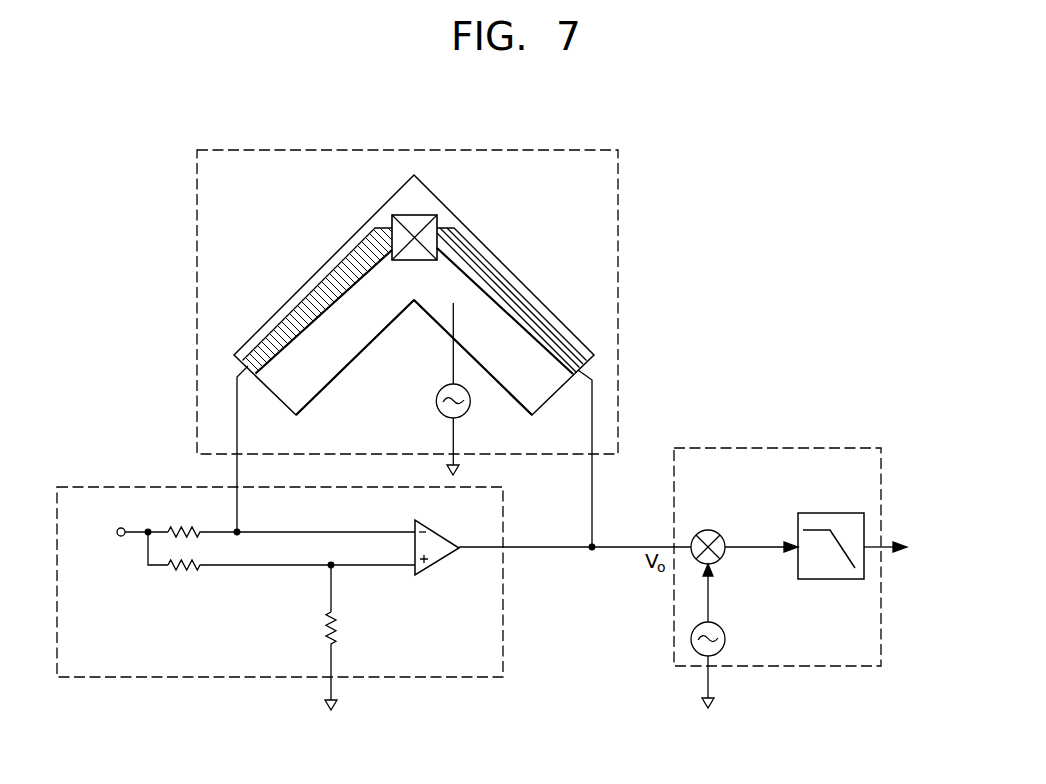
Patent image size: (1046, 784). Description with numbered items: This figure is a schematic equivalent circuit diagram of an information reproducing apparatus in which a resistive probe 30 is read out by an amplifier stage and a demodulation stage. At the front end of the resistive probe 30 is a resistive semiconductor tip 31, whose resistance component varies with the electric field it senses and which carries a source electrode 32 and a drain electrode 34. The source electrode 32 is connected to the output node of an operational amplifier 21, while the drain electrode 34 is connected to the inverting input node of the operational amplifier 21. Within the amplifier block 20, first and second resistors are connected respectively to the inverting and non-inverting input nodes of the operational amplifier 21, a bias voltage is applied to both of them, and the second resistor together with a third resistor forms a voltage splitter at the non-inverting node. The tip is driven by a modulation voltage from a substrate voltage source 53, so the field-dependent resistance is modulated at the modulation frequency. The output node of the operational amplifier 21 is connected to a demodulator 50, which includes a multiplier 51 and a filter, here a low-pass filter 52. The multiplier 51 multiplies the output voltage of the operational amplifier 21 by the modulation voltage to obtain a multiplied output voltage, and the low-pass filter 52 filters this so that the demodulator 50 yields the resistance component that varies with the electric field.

The signal conditioning circuit block 20 is at (110, 487).
The operational amplifier 21 is at (437, 566).
The resistive probe 30 is at (585, 148).
The resistive semiconductor tip 31 is at (420, 216).
The source electrode 32 is at (543, 322).
The drain electrode 34 is at (285, 323).
The demodulator 50 is at (815, 447).
The multiplier 51 is at (720, 535).
The LPF 52 is at (848, 513).
The substrate voltage source 53 is at (436, 401).